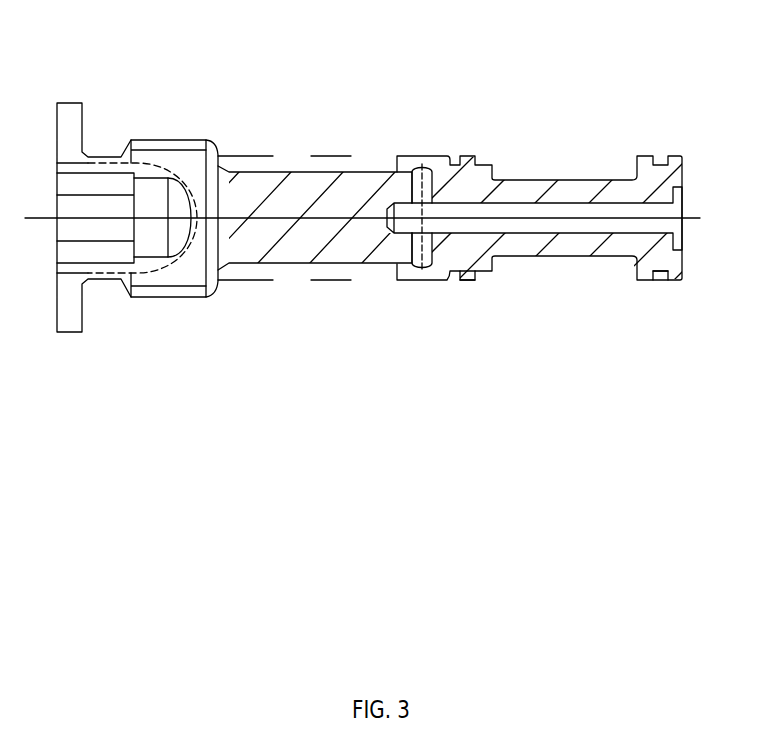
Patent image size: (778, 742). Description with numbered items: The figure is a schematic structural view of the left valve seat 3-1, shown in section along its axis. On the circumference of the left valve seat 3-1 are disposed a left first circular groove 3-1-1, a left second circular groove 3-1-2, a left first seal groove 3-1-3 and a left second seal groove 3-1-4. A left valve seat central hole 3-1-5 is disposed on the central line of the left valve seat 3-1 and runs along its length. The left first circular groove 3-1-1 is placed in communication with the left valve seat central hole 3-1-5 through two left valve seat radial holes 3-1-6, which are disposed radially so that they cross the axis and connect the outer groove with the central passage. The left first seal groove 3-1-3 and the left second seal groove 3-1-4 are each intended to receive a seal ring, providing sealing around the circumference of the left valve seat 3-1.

The left valve seat 3-1 is at (401, 278).
The left first circular groove 3-1-1 is at (385, 272).
The left second circular groove 3-1-2 is at (532, 270).
The left first seal groove 3-1-3 is at (462, 275).
The left second seal groove 3-1-4 is at (660, 272).
The left valve seat central hole 3-1-5 is at (536, 215).
The left valve seat radial holes 3-1-6 is at (427, 185).